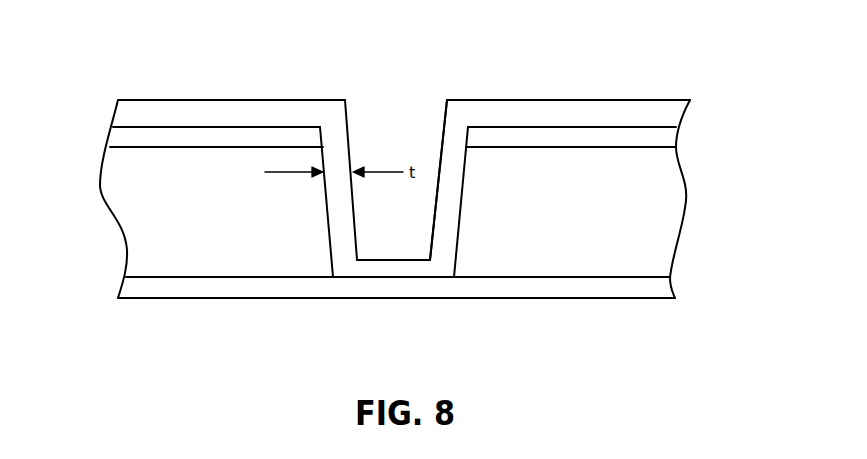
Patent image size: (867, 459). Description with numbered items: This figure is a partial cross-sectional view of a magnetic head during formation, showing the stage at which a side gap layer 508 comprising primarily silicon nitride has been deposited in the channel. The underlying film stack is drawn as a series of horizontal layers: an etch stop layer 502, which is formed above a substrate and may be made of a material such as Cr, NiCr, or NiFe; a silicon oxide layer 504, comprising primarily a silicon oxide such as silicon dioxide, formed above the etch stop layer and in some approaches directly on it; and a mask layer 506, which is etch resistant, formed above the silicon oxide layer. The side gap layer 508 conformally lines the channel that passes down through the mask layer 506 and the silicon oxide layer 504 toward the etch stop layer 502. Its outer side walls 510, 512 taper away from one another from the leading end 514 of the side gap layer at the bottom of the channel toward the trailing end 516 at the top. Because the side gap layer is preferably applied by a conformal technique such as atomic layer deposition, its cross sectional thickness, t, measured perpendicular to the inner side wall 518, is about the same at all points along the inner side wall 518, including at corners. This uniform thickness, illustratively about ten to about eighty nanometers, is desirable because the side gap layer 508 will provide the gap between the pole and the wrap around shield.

The etch stop layer 502 is at (663, 289).
The silicon oxide layer 504 is at (663, 236).
The mask layer 506 is at (661, 138).
The side gap layer 508 is at (663, 103).
The outer side wall 510 is at (327, 215).
The outer side wall 512 is at (460, 235).
The leading end 514 is at (347, 290).
The trailing end 516 is at (315, 84).
The inner side wall 518 is at (443, 123).